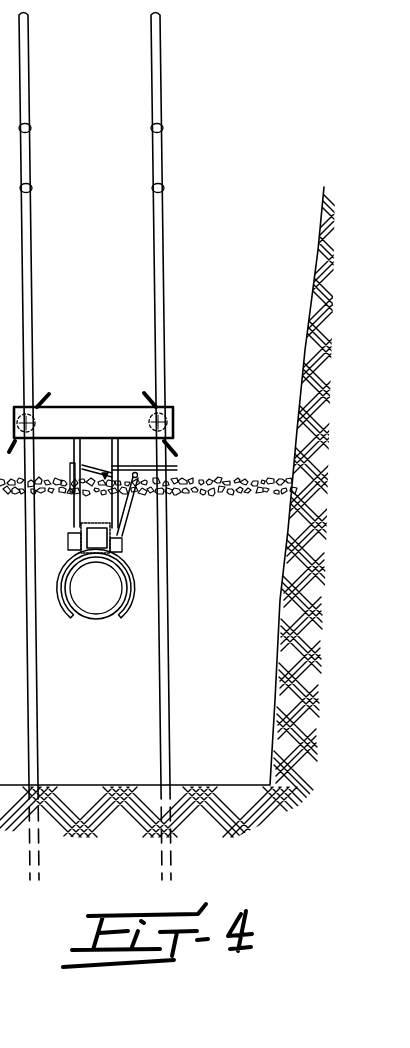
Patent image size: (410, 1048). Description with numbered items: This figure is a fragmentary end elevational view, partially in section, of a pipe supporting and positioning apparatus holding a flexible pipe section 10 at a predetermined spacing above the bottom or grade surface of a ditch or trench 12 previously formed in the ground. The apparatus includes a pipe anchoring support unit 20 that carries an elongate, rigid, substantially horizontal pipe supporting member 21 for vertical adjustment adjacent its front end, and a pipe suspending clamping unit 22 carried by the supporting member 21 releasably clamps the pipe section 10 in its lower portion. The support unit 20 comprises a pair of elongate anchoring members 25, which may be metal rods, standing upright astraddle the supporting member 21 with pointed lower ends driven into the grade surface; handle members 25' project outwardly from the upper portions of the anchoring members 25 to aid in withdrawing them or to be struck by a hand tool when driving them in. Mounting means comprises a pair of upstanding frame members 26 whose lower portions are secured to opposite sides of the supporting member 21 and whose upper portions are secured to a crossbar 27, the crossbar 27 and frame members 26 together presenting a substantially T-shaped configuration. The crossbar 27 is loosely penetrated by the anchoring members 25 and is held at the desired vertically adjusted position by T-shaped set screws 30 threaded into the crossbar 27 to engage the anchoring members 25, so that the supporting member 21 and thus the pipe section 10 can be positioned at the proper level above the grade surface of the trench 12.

The flexible pipe section 10 is at (97, 620).
The ditch or trench 12 is at (306, 225).
The pipe anchoring support unit 20 is at (93, 396).
The pipe supporting member 21 is at (127, 539).
The pipe suspending clamping unit 22 is at (155, 518).
The anchoring member 25 is at (95, 447).
The handle member 25' is at (92, 163).
The upstanding frame member 26 is at (112, 503).
The crossbar 27 is at (112, 420).
The set screw 30 is at (45, 399).